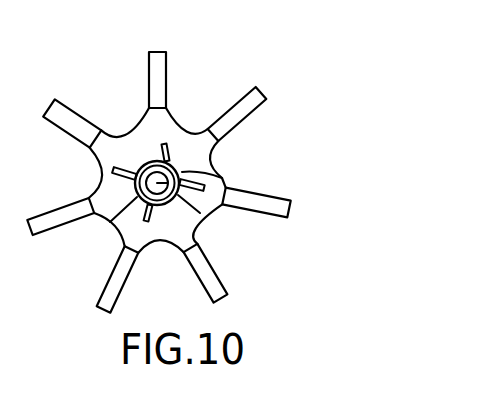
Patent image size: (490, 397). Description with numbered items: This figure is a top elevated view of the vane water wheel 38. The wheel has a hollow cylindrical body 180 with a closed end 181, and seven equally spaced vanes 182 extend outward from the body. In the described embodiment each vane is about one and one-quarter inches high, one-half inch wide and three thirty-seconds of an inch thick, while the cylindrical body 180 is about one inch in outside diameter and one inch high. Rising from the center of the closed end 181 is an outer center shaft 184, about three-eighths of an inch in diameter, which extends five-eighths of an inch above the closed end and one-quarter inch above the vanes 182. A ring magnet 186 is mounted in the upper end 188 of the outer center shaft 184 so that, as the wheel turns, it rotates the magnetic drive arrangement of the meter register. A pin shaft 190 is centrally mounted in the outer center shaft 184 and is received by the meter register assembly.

The vane water wheel 38 is at (279, 117).
The hollow cylindrical body 180 is at (133, 133).
The closed end 181 is at (182, 147).
The vanes 182 is at (262, 90).
The outer center shaft 184 is at (177, 165).
The ring magnet 186 is at (222, 178).
The upper end 188 is at (110, 222).
The pin shaft 190 is at (206, 217).